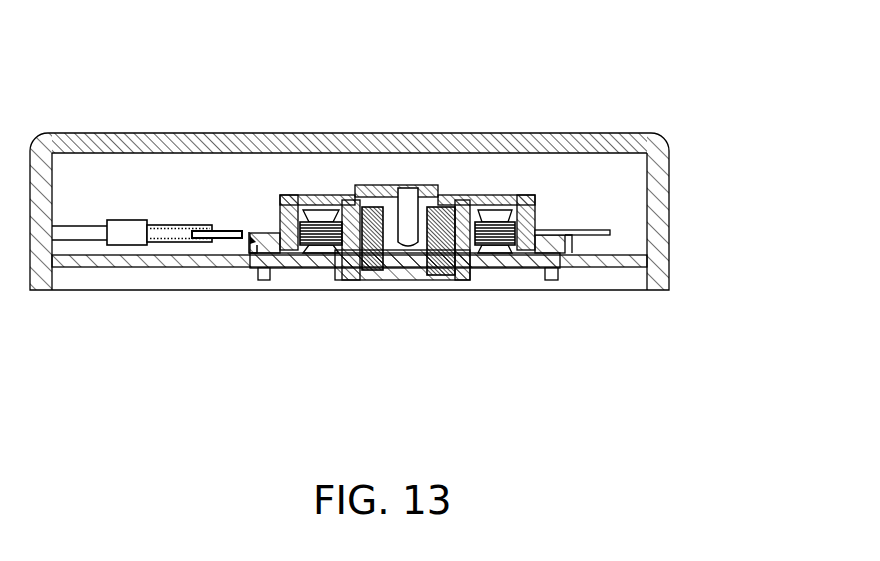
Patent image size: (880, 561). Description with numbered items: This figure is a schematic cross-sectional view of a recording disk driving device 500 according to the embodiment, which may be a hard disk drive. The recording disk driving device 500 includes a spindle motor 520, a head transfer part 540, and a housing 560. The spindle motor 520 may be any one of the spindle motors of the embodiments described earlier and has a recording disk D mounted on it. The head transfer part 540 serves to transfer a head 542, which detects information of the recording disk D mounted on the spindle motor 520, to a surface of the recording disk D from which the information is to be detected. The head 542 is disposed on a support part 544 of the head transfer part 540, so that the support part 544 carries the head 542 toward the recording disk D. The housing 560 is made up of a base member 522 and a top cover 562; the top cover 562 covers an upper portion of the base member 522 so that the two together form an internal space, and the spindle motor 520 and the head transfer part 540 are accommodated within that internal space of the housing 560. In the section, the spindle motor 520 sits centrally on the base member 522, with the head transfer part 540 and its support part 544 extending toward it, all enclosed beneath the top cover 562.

The recording disk driving device 500 is at (223, 56).
The housing 560 is at (398, 172).
The top cover 562 is at (393, 134).
The base member 522 is at (660, 283).
The head transfer part 540 is at (120, 245).
The support part 544 is at (177, 247).
The head 542 is at (243, 250).
The spindle motor 520 is at (400, 284).
The recording disk D is at (582, 232).